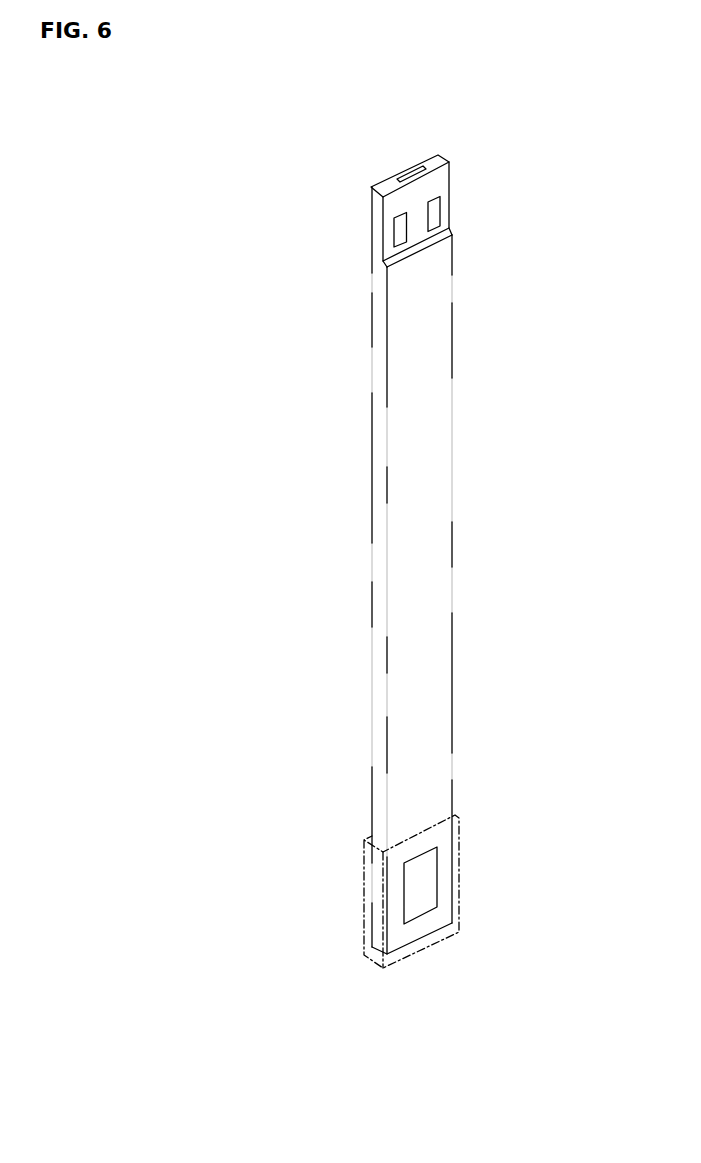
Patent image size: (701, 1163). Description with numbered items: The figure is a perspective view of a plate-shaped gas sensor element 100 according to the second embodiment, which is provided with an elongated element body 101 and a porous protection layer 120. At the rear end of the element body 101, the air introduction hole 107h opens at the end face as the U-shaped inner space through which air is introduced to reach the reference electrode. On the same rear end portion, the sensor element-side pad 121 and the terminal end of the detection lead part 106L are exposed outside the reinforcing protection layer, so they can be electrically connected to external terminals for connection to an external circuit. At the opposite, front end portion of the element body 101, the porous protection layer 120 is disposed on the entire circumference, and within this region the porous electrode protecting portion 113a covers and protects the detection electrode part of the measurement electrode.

The plate-shaped gas sensor element 100 is at (459, 539).
The element body 101 is at (430, 722).
The detection lead part 106L is at (402, 235).
The air introduction hole 107h is at (407, 170).
The electrode protecting portion 113a is at (423, 882).
The porous protection layer 120 is at (460, 829).
The sensor element-side pad 121 is at (437, 220).